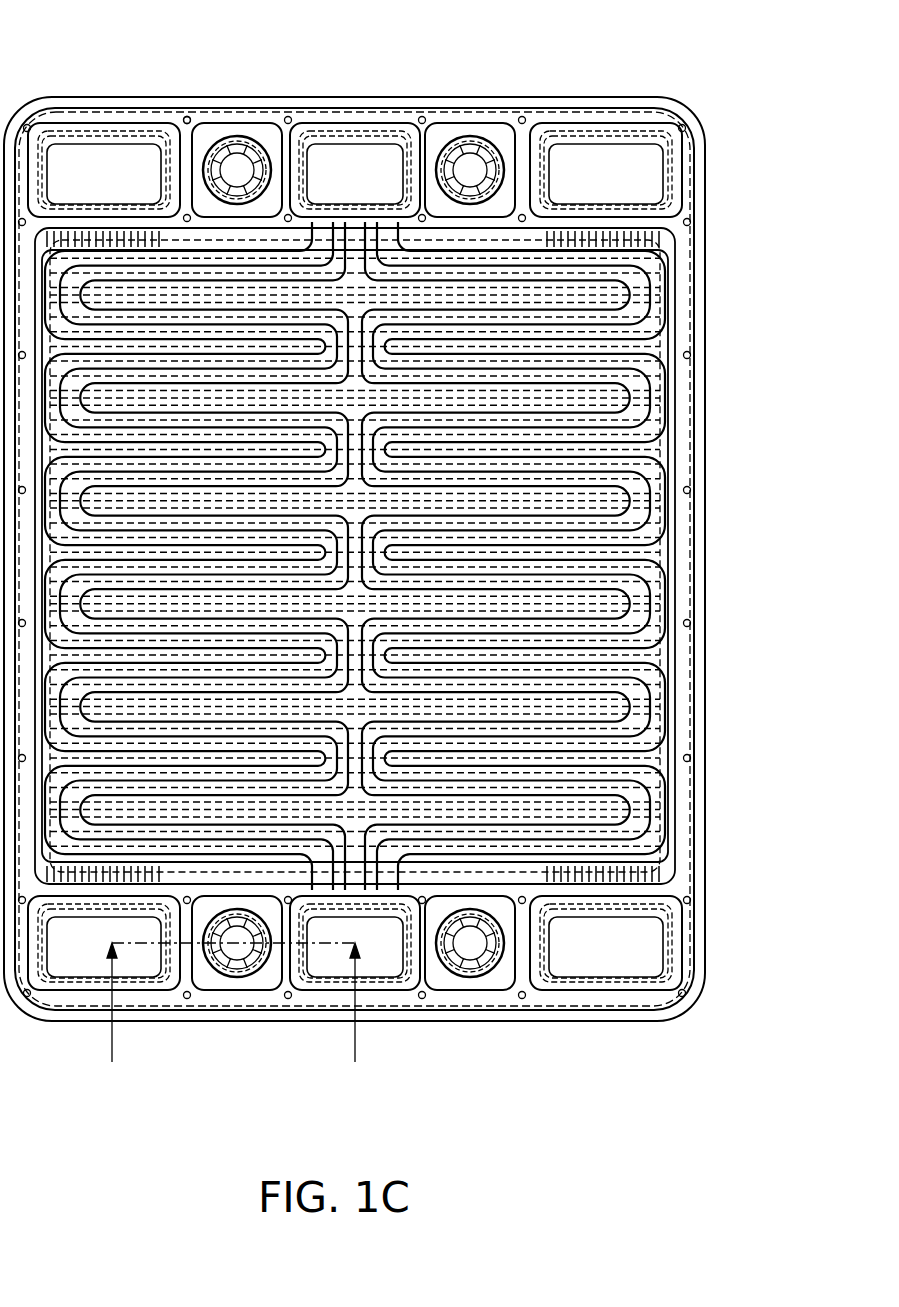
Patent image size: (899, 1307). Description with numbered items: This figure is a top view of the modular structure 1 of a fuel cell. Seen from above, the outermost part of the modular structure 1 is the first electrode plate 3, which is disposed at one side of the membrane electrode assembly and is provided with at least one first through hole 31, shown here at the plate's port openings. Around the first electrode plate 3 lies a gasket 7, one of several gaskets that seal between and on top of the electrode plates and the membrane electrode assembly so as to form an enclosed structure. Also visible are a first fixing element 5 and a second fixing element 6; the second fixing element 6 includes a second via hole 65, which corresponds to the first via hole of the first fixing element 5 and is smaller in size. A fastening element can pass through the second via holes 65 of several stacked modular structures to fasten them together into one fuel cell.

The modular structure 1 is at (88, 74).
The first electrode plate 3 is at (668, 824).
The first fixing element 5 is at (252, 966).
The second fixing element 6 is at (233, 964).
The gasket 7 is at (700, 891).
The first through hole 31 is at (207, 972).
The second via hole 65 is at (470, 978).